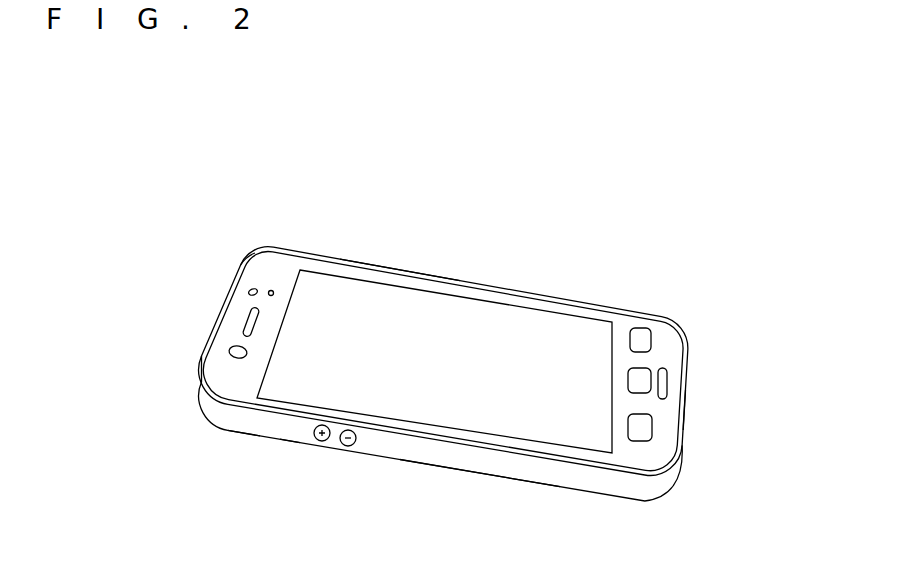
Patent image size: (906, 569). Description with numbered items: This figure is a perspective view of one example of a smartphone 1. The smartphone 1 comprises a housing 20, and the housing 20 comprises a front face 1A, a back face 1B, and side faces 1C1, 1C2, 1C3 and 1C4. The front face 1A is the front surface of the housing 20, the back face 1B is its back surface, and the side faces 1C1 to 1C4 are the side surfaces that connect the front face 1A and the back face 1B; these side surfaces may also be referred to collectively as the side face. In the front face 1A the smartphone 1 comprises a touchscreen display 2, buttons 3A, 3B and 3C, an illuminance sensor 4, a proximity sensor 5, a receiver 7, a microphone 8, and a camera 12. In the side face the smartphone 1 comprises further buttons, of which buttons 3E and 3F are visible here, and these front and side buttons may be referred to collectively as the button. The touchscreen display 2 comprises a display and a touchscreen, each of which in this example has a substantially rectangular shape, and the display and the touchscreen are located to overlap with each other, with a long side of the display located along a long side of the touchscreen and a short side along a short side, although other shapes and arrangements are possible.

The smartphone 1 is at (487, 229).
The front face 1A is at (218, 373).
The back face 1B is at (245, 433).
The side face 1C1 is at (237, 271).
The side face 1C2 is at (685, 418).
The side face 1C3 is at (493, 463).
The side face 1C4 is at (400, 269).
The touchscreen display 2 is at (503, 317).
The button 3A is at (652, 432).
The button 3B is at (645, 368).
The button 3C is at (640, 328).
The button 3E is at (323, 443).
The button 3F is at (350, 447).
The illuminance sensor 4 is at (249, 292).
The proximity sensor 5 is at (272, 289).
The receiver 7 is at (246, 318).
The microphone 8 is at (668, 386).
The camera 12 is at (230, 351).
The housing 20 is at (292, 428).